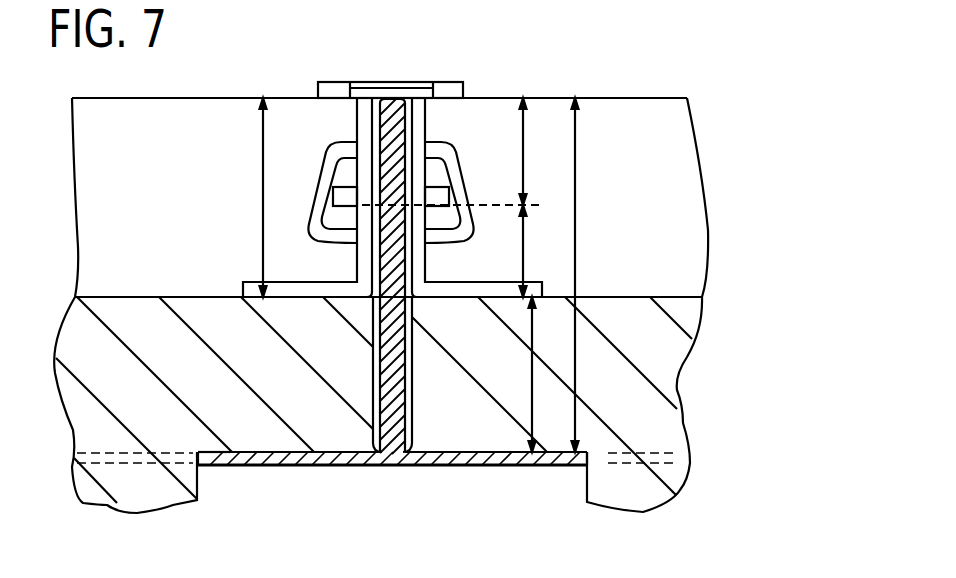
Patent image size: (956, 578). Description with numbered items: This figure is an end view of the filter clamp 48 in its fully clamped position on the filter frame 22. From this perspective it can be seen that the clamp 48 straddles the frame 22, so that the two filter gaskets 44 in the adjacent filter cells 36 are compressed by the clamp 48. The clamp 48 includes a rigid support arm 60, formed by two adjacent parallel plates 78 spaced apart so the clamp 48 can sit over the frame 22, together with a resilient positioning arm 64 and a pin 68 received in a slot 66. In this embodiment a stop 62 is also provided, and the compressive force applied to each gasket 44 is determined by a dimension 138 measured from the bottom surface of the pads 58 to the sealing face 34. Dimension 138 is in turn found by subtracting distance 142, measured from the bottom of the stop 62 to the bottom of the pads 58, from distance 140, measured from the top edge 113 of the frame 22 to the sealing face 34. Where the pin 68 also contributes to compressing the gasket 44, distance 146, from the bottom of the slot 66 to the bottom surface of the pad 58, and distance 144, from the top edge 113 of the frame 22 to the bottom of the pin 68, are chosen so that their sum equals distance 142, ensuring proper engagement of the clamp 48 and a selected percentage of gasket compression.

The filter frame 22 is at (390, 466).
The sealing face 34 is at (207, 450).
The filter cells 36 is at (131, 284).
The filter gasket 44 is at (231, 410).
The filter clamp 48 is at (390, 52).
The pad 58 is at (314, 290).
The rigid support arm 60 is at (427, 118).
The stop 62 is at (447, 88).
The resilient positioning arm 64 is at (456, 170).
The slot 66 is at (362, 212).
The pin 68 is at (345, 185).
The plates 78 is at (360, 263).
The top edge 113 is at (550, 97).
The dimension 138 is at (532, 398).
The distance 140 is at (577, 165).
The distance 142 is at (263, 190).
The distance 144 is at (523, 165).
The distance 146 is at (552, 240).